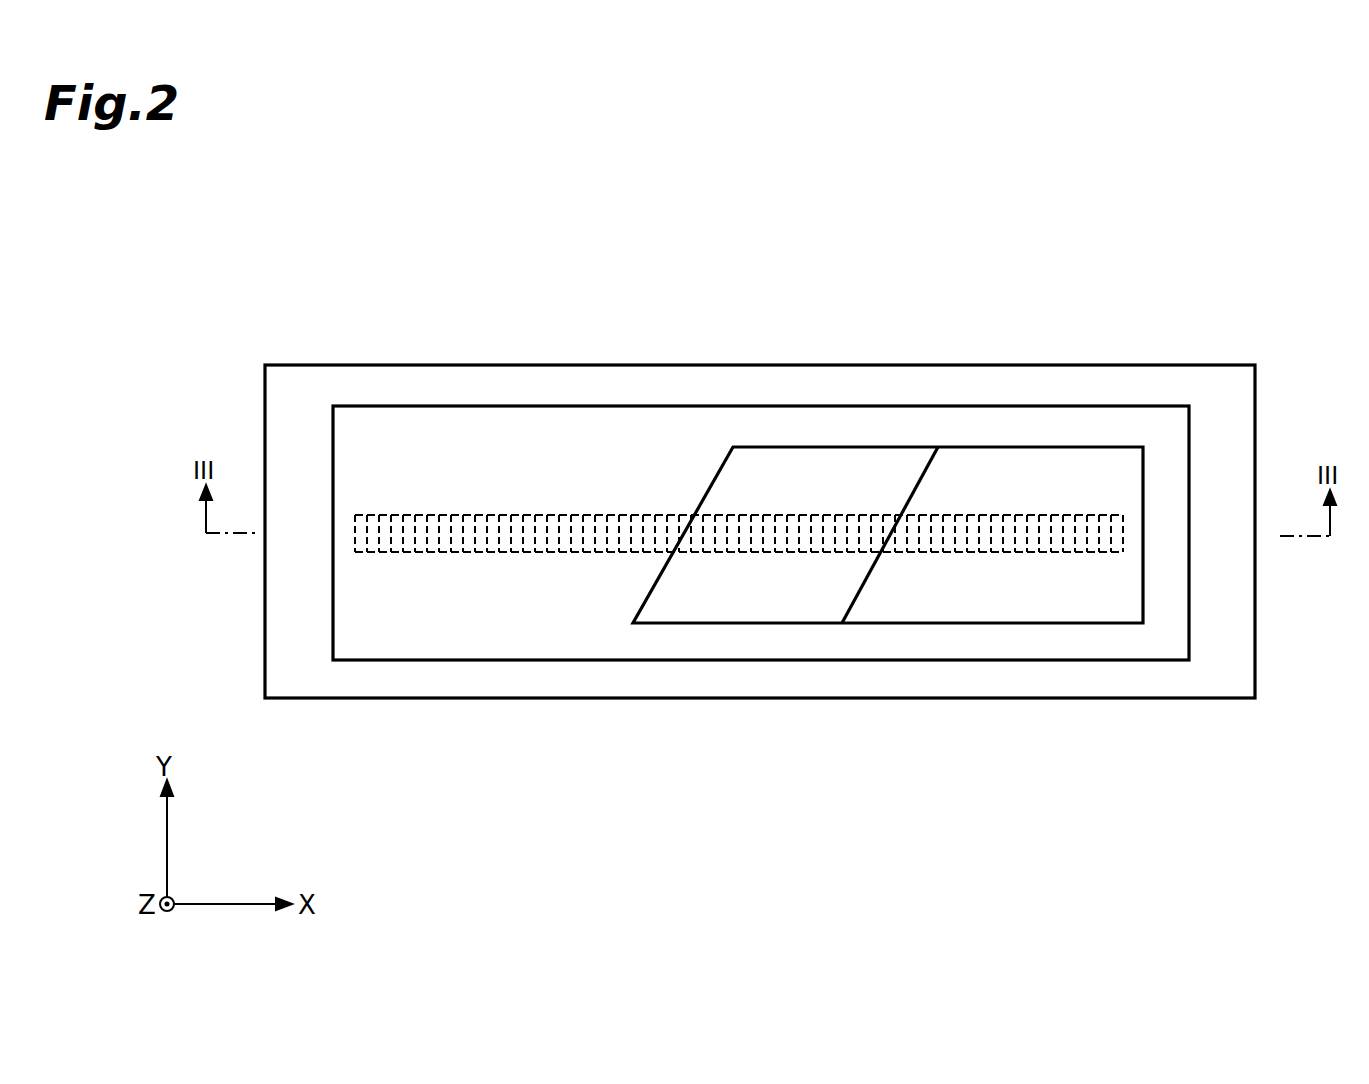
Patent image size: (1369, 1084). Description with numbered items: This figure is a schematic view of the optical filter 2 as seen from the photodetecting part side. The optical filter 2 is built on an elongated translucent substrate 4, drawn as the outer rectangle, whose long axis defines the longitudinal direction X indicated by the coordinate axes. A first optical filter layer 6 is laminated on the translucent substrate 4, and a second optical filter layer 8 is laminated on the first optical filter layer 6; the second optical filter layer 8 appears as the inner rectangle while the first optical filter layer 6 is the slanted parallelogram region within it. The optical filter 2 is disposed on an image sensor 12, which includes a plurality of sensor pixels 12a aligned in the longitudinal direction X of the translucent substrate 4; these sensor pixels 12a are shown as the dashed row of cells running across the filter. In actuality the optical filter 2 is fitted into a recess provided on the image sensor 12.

The optical filter 2 is at (1172, 290).
The translucent substrate 4 is at (496, 364).
The first optical filter layer 6 is at (853, 478).
The second optical filter layer 8 is at (656, 441).
The image sensor 12 is at (1070, 556).
The sensor pixels 12a is at (946, 556).